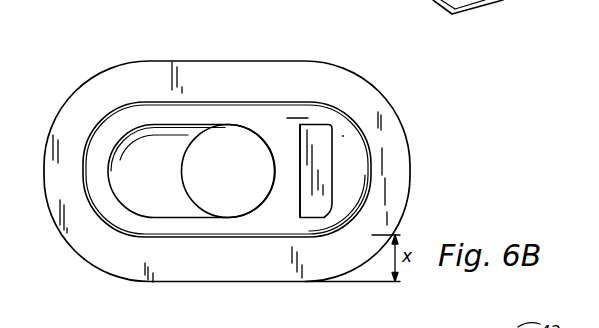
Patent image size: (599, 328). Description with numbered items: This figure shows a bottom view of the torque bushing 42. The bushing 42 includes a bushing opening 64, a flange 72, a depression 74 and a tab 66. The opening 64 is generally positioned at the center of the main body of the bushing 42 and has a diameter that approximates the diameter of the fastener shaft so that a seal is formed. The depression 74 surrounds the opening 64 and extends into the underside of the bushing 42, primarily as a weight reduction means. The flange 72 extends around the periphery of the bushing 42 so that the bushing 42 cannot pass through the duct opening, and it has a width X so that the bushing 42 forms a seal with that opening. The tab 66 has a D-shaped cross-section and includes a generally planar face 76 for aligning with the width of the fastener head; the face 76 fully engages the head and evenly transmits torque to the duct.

The bushing 42 is at (136, 52).
The flange 72 is at (90, 117).
The depression 74 is at (157, 192).
The bushing opening 64 is at (233, 163).
The tab 66 is at (323, 145).
The planar face 76 is at (296, 190).